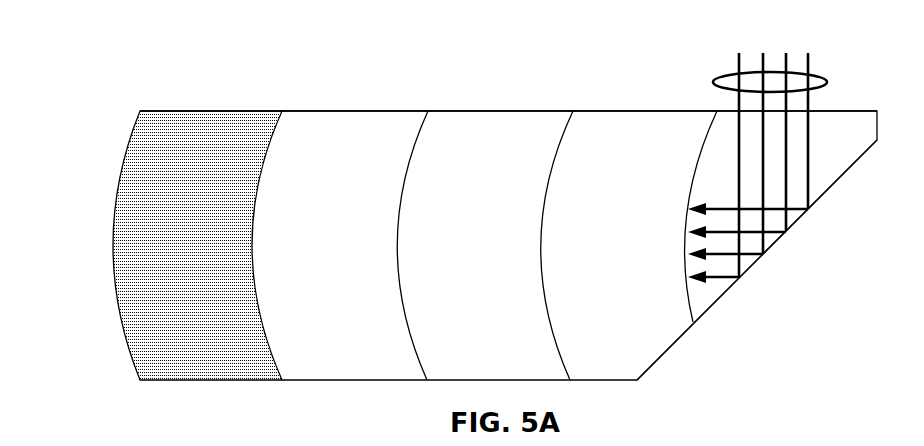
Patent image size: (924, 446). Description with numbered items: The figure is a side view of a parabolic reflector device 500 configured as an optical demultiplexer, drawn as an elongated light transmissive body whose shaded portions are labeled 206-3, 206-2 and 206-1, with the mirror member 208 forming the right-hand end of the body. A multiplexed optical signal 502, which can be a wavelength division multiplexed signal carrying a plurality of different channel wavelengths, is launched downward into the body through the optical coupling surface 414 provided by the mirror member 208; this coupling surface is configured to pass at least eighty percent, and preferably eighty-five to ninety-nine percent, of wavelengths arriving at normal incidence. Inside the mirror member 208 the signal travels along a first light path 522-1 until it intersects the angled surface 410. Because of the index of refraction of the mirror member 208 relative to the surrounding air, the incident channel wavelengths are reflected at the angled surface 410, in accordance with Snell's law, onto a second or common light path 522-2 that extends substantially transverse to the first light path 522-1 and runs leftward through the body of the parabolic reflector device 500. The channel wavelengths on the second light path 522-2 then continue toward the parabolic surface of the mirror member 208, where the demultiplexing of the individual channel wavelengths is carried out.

The parabolic reflector device 500 is at (237, 62).
The third section of waveguide 206-3 is at (242, 120).
The second section of waveguide 206-2 is at (373, 120).
The first section of waveguide 206-1 is at (518, 118).
The mirror member 208 is at (638, 118).
The optical coupling surface 414 is at (840, 108).
The angled surface 410 is at (752, 272).
The multiplexed optical signal 502 is at (792, 52).
The first light path 522-1 is at (813, 155).
The second light path 522-2 is at (712, 293).